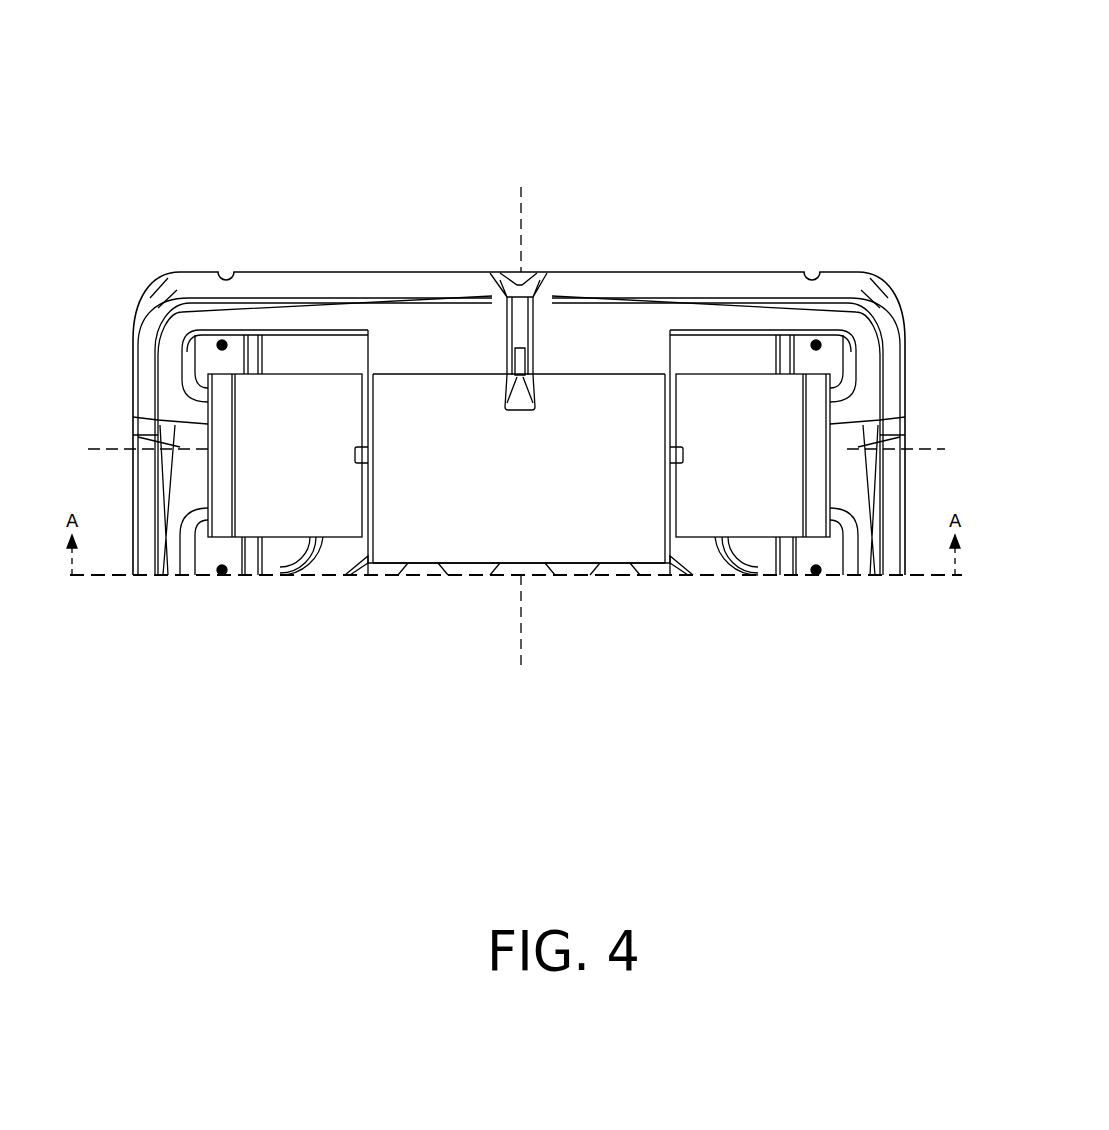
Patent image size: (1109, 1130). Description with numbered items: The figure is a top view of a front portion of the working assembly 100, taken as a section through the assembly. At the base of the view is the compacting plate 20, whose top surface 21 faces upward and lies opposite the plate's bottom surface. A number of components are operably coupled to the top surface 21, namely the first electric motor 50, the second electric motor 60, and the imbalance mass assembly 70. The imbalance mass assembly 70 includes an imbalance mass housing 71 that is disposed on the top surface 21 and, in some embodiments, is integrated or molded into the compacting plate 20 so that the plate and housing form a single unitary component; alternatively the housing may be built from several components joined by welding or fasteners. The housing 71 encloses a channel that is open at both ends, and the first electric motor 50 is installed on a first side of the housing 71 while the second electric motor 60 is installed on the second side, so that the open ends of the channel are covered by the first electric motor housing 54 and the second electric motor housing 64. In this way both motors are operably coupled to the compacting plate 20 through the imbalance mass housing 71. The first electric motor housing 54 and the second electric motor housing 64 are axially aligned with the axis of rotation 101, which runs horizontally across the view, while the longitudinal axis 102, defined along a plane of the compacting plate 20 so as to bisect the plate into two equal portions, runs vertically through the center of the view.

The working assembly 100 is at (673, 72).
The imbalance mass assembly 70 is at (412, 370).
The imbalance mass housing 71 is at (605, 497).
The second electric motor 60 is at (268, 378).
The second electric motor housing 64 is at (334, 410).
The first electric motor 50 is at (743, 370).
The first electric motor housing 54 is at (697, 420).
The top surface 21 is at (275, 548).
The compacting plate 20 is at (762, 550).
The axis of rotation 101 is at (926, 449).
The longitudinal axis 102 is at (520, 643).